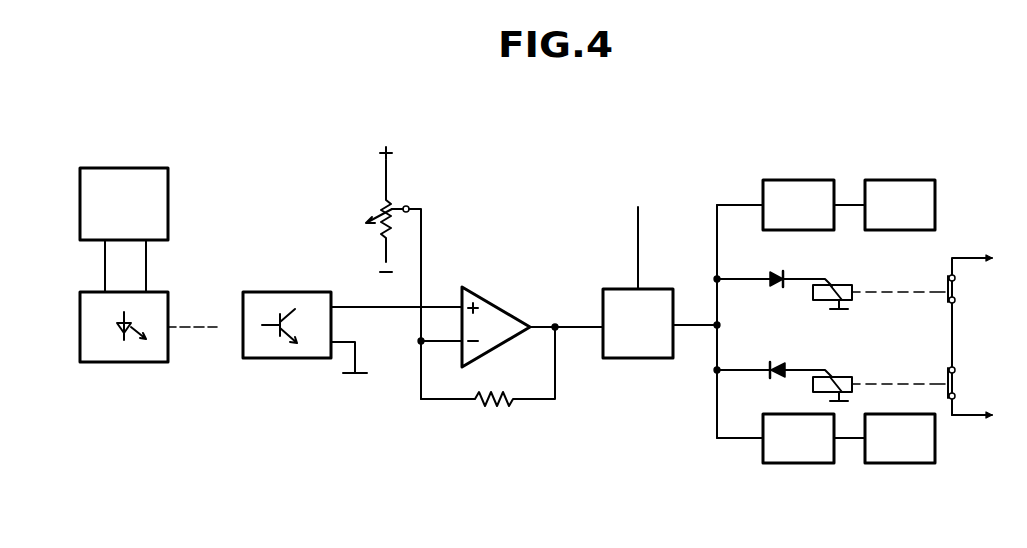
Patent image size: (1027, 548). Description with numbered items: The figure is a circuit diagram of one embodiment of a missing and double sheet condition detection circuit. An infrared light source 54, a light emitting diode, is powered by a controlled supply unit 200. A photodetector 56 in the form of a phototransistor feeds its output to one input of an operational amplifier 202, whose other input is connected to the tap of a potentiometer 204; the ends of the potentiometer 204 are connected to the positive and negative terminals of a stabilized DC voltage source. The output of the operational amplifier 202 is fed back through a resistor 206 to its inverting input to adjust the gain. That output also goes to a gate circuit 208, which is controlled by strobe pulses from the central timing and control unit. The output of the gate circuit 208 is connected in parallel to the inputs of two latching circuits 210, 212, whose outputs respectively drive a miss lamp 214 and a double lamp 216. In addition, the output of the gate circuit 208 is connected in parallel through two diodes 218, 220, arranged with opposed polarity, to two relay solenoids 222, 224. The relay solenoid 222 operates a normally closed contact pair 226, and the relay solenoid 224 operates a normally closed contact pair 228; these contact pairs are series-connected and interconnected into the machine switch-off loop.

The infrared light source 54 is at (148, 362).
The photodetector 56 is at (286, 358).
The controlled supply unit 200 is at (168, 207).
The operational amplifier 202 is at (500, 296).
The potentiometer 204 is at (378, 204).
The resistor 206 is at (496, 403).
The gate circuit 208 is at (658, 287).
The latching circuit 210 is at (790, 180).
The latching circuit 212 is at (795, 463).
The miss lamp 214 is at (912, 180).
The double lamp 216 is at (912, 463).
The diode 218 is at (780, 272).
The diode 220 is at (782, 364).
The relay solenoid 222 is at (848, 285).
The relay solenoid 224 is at (864, 353).
The normally closed contact pair 226 is at (957, 288).
The normally closed contact pair 228 is at (955, 383).